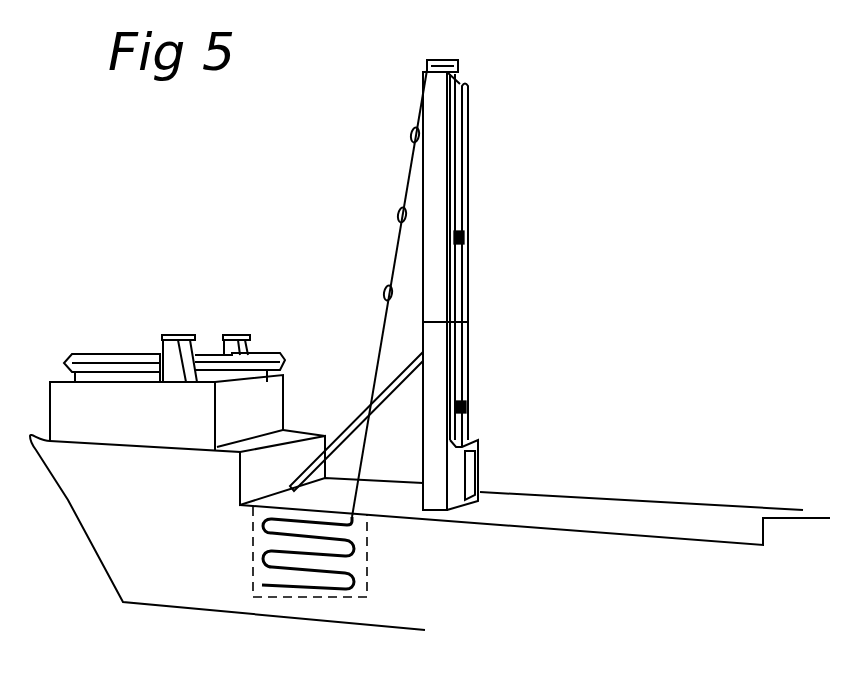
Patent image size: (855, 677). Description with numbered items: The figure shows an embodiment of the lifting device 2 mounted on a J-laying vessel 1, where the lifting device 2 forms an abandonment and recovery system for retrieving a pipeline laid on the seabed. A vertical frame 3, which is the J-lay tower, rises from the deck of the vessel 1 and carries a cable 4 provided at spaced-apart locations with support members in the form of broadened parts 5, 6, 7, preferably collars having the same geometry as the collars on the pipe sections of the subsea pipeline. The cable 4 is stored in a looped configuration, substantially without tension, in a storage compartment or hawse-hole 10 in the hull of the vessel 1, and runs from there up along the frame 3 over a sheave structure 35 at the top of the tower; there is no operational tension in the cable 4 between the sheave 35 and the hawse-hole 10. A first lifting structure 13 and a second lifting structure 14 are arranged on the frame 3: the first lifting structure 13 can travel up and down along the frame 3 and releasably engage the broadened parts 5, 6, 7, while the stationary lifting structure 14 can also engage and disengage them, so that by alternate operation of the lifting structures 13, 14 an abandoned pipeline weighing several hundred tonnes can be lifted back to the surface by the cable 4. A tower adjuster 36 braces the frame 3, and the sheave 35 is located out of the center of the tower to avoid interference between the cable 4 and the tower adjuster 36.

The vessel 1 is at (171, 237).
The lifting device 2 is at (524, 183).
The vertical frame 3 is at (469, 287).
The cable 4 is at (378, 352).
The broadened part 5 is at (413, 131).
The broadened part 6 is at (400, 216).
The broadened part 7 is at (386, 292).
The storage compartment 10 is at (258, 588).
The first lifting structure 13 is at (463, 238).
The second lifting structure 14 is at (466, 409).
The sheave structure 35 is at (458, 62).
The tower adjuster 36 is at (357, 417).